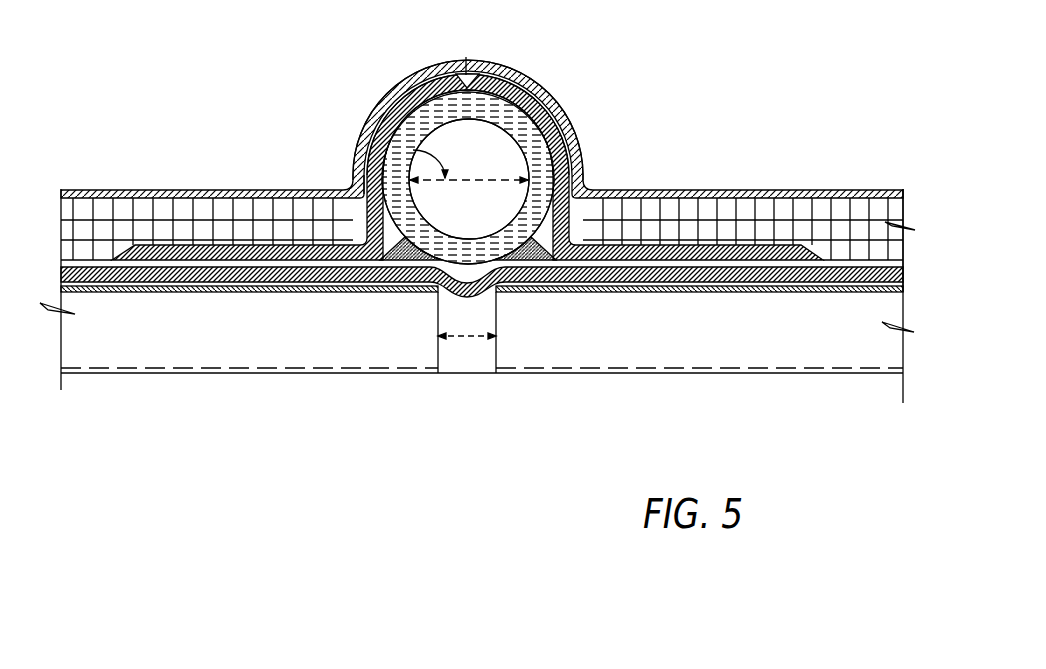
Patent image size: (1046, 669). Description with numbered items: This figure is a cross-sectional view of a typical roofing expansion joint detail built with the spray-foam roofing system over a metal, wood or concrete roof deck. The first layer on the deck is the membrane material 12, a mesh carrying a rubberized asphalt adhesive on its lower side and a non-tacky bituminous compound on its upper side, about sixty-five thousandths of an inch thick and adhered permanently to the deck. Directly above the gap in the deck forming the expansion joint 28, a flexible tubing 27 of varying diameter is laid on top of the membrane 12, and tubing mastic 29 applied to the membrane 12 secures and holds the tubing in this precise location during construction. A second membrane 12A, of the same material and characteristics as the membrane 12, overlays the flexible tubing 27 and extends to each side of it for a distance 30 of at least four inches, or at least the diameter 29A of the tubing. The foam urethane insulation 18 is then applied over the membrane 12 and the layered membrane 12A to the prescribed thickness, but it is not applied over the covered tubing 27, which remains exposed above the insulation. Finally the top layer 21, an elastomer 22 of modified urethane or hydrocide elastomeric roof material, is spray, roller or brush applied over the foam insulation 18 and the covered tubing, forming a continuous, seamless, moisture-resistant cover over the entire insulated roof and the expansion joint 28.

The membrane material 12 is at (904, 274).
The second membrane 12A is at (467, 84).
The foam urethane insulation 18 is at (96, 228).
The top layer 21 is at (787, 190).
The elastomer 22 is at (904, 191).
The flexible tubing 27 is at (543, 119).
The expansion joint 28 is at (470, 338).
The tubing mastic 29 is at (405, 263).
The diameter of the flexible tubing 29A is at (362, 156).
The distance 30 is at (260, 244).